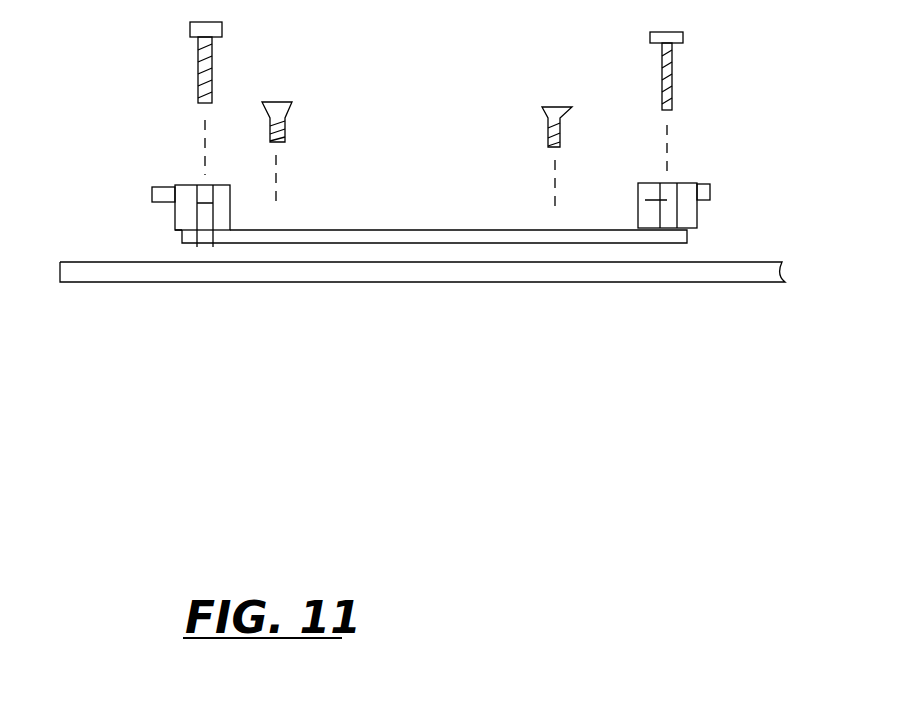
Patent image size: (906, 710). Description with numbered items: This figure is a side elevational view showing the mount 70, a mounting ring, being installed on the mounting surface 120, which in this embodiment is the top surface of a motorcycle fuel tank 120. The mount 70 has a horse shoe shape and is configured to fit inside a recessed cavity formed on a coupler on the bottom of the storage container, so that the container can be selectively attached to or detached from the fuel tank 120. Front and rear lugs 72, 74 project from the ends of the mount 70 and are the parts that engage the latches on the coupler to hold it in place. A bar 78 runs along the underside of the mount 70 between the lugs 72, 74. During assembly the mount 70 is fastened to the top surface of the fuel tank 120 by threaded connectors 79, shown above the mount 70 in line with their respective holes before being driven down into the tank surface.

The mount 70 is at (155, 120).
The front lug 72 is at (163, 183).
The rear lug 74 is at (152, 192).
The bar 78 is at (182, 240).
The threaded connector 79 is at (220, 40).
The fuel tank 120 is at (688, 303).